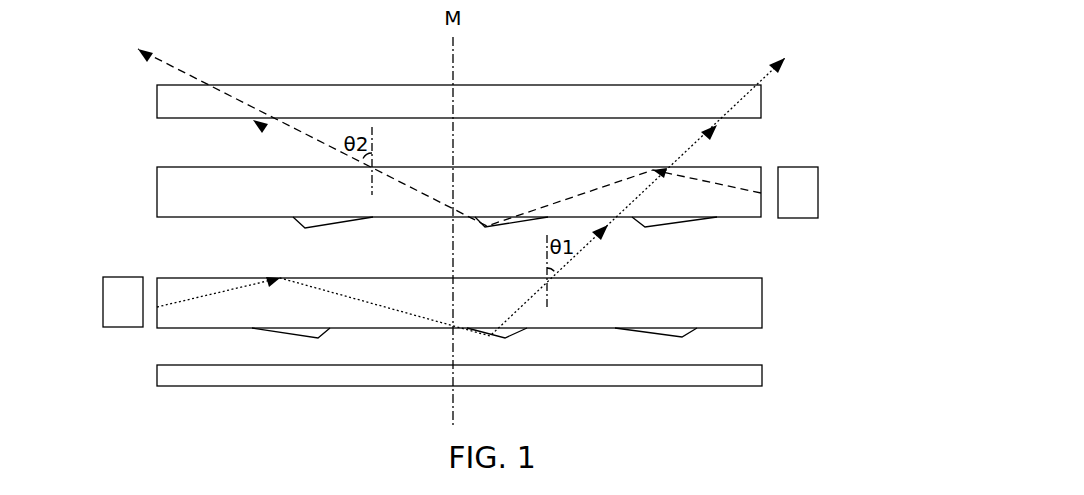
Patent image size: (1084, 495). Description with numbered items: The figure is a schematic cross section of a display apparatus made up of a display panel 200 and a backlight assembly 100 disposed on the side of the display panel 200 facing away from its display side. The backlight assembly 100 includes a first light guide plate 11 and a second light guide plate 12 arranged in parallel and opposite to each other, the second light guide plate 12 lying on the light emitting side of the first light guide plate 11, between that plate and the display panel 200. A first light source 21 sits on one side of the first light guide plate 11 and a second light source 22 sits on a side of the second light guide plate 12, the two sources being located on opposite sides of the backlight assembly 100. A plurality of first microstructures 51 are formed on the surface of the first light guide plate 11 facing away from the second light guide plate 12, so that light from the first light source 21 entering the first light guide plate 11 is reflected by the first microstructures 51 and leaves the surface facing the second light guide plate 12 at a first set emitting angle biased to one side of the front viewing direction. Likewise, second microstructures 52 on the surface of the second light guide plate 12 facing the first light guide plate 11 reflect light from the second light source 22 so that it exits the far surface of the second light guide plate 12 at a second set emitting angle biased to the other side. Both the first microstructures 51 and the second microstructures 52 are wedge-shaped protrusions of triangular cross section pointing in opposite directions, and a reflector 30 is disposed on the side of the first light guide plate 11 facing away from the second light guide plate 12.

The backlight assembly 100 is at (502, 275).
The display panel 200 is at (763, 96).
The second light guide plate 12 is at (170, 193).
The first light guide plate 11 is at (750, 307).
The reflector 30 is at (498, 366).
The first light source 21 is at (122, 298).
The second light source 22 is at (802, 193).
The first microstructures 51 is at (687, 332).
The second microstructures 52 is at (660, 222).